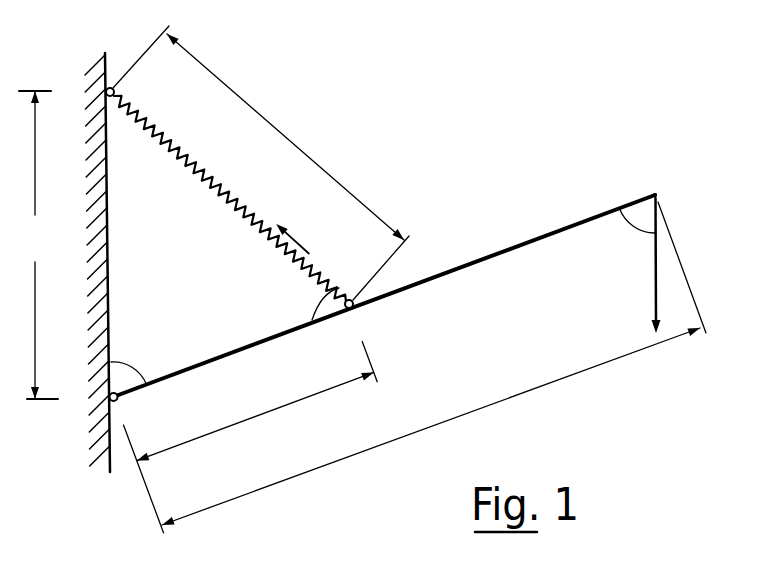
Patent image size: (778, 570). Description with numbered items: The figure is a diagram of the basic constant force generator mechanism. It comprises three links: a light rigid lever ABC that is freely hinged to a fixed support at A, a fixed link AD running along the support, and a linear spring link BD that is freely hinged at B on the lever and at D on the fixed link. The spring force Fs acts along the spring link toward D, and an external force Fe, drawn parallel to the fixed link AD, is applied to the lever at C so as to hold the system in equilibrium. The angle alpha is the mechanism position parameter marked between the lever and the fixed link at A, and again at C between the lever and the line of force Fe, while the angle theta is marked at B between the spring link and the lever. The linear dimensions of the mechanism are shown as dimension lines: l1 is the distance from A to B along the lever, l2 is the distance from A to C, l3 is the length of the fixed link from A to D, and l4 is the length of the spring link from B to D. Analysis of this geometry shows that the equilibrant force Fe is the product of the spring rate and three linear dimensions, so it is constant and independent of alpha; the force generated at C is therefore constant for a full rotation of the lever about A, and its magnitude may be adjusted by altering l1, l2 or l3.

The hinge point A is at (122, 410).
The hinge point B is at (355, 322).
The lever end C is at (664, 192).
The hinge point D is at (127, 84).
The mechanism position parameter alpha is at (383, 296).
The spring link angle theta is at (313, 304).
The spring force Fs is at (310, 246).
The external force Fe is at (669, 265).
The lever dimension AB l1 is at (251, 437).
The lever dimension AC l2 is at (434, 363).
The fixed link dimension AD l3 is at (38, 245).
The spring link length BD l4 is at (261, 163).